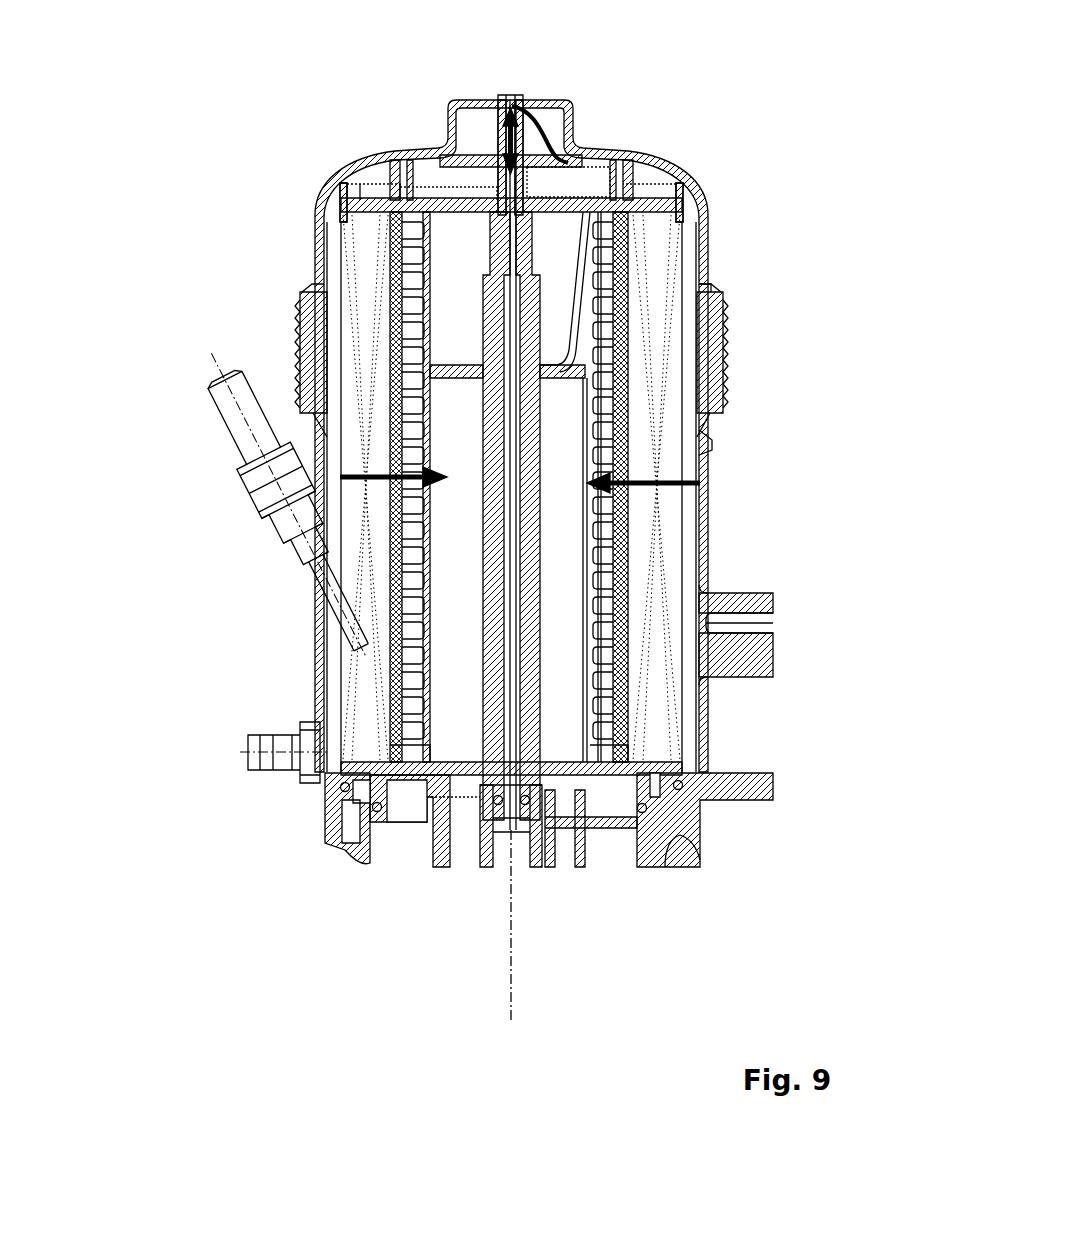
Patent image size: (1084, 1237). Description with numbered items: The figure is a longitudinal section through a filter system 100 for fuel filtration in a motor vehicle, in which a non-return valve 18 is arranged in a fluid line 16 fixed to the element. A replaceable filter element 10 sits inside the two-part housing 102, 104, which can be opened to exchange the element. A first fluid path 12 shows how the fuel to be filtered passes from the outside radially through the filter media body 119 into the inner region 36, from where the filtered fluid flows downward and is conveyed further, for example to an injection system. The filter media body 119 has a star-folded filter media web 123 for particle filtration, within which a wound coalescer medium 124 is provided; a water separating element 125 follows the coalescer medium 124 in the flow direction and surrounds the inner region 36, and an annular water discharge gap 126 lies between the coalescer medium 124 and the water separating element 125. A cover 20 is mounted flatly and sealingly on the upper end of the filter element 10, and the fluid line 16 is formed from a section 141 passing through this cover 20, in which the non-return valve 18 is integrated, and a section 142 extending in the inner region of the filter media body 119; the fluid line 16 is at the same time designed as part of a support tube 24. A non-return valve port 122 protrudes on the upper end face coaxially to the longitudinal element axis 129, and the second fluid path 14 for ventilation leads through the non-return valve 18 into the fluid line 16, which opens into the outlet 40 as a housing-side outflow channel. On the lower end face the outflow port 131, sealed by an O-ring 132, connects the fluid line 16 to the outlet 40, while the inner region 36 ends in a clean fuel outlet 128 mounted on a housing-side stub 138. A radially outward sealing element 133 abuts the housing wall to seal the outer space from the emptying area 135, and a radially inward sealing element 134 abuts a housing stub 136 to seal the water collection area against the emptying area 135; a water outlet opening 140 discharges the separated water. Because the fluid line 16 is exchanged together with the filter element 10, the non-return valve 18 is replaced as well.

The filter system 100 is at (186, 142).
The filter element 10 is at (333, 230).
The filter media body 119 is at (700, 240).
The housing cover 102 is at (716, 287).
The housing 104 is at (716, 440).
The cover 20 is at (397, 199).
The section 141 is at (528, 185).
The non-return valve 18 is at (507, 126).
The non-return valve port 122 is at (526, 163).
The second fluid path 14 is at (554, 145).
The support tube 24 is at (491, 299).
The fluid line 16 is at (510, 270).
The inner region 36 is at (544, 452).
The section 142 is at (533, 384).
The first fluid path 12 is at (606, 498).
The annular water discharge gap 126 is at (400, 657).
The coalescer medium 124 is at (632, 712).
The star-folded filter media web 123 is at (657, 540).
The housing-side stub 138 is at (460, 702).
The water separating element 125 is at (591, 568).
The clean fuel outlet 128 is at (463, 803).
The emptying area 135 is at (344, 832).
The housing stub 136 is at (372, 834).
The outlet 40 is at (514, 850).
The outflow port 131 is at (512, 829).
The O-ring 132 is at (487, 818).
The water outlet opening 140 is at (605, 798).
The sealing element 133 is at (680, 785).
The sealing element 134 is at (643, 809).
The longitudinal element axis 129 is at (510, 992).